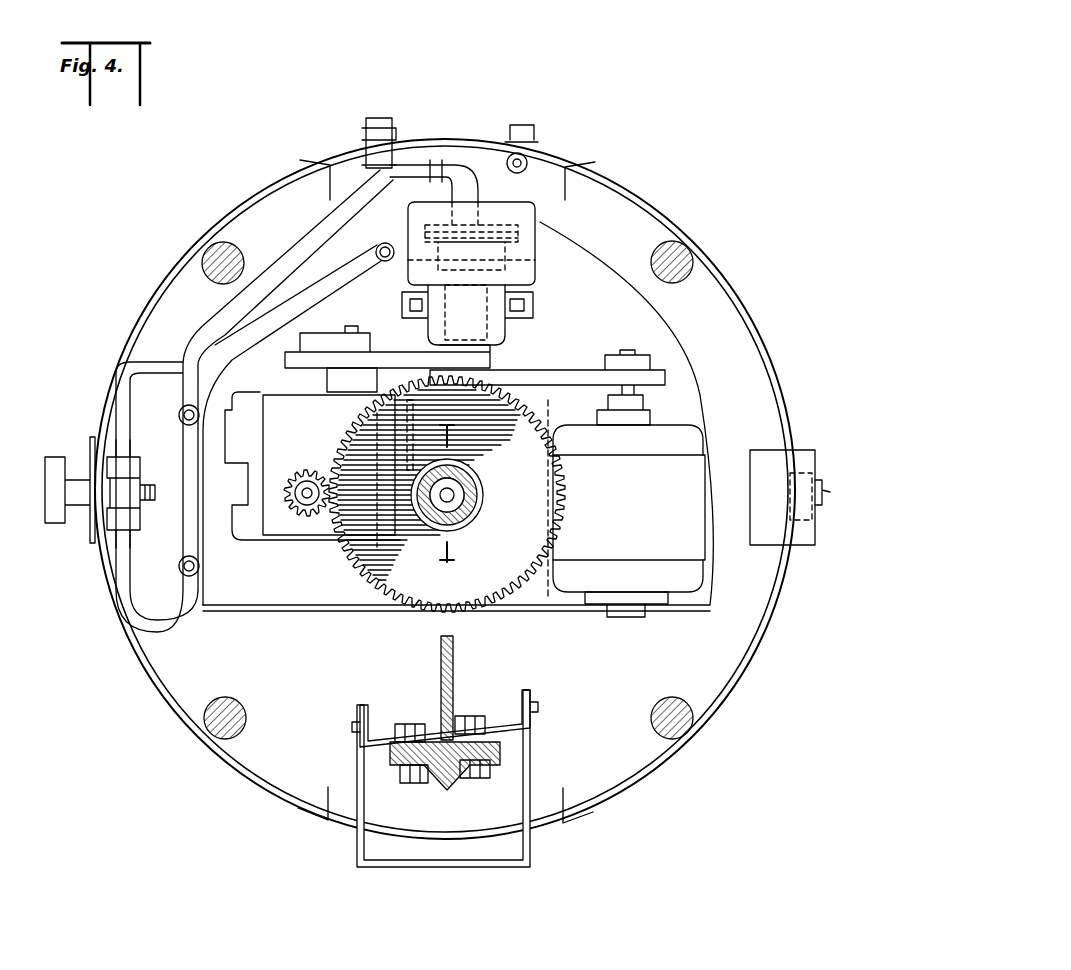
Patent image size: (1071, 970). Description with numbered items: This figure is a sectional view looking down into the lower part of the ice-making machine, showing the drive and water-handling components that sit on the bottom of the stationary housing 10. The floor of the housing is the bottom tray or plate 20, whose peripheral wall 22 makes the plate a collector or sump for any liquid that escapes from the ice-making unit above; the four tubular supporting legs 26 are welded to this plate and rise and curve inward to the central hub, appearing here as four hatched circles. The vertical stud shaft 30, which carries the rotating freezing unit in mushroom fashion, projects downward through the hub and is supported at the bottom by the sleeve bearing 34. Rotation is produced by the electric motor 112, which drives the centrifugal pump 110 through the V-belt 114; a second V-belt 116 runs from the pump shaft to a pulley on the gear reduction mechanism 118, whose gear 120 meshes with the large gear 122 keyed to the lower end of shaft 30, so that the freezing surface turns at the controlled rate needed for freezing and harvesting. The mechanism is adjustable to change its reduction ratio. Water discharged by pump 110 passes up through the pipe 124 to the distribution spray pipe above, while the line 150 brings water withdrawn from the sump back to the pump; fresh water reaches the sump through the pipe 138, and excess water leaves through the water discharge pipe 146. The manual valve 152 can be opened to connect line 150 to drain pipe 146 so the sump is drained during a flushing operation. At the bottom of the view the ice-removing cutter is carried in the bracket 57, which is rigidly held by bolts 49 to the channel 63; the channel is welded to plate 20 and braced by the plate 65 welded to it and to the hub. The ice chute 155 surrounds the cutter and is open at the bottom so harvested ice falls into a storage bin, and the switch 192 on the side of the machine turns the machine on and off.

The housing 10 is at (458, 557).
The bottom tray or plate 20 is at (160, 662).
The peripheral wall 22 is at (225, 770).
The tubular supporting legs 26 is at (218, 258).
The vertical stud shaft 30 is at (468, 482).
The sleeve bearing 34 is at (466, 500).
The bolts 49 is at (410, 722).
The bracket 57 is at (450, 795).
The channel 63 is at (512, 745).
The brace plate 65 is at (438, 650).
The centrifugal pump 110 is at (535, 264).
The electric motor 112 is at (670, 440).
The V-belt 114 is at (530, 380).
The V-belt 116 is at (432, 352).
The gear reduction mechanism 118 is at (292, 400).
The gear 120 is at (298, 478).
The gear 122 is at (375, 552).
The pipe 124 is at (380, 258).
The pipe 138 is at (522, 172).
The water discharge pipe 146 is at (327, 272).
The line 150 is at (476, 176).
The manual valve 152 is at (120, 488).
The ice chute 155 is at (436, 848).
The switch 192 is at (822, 478).